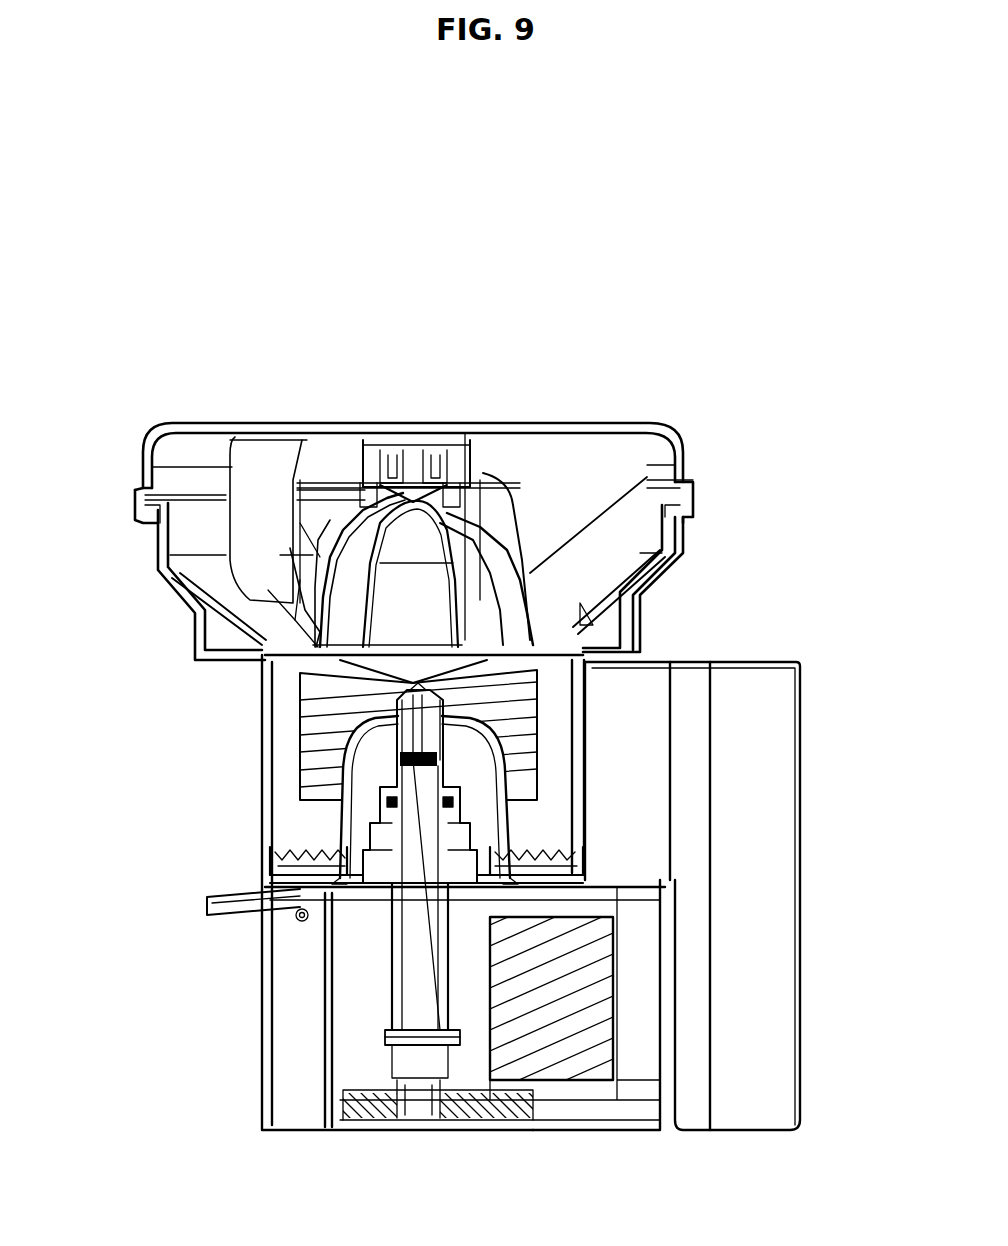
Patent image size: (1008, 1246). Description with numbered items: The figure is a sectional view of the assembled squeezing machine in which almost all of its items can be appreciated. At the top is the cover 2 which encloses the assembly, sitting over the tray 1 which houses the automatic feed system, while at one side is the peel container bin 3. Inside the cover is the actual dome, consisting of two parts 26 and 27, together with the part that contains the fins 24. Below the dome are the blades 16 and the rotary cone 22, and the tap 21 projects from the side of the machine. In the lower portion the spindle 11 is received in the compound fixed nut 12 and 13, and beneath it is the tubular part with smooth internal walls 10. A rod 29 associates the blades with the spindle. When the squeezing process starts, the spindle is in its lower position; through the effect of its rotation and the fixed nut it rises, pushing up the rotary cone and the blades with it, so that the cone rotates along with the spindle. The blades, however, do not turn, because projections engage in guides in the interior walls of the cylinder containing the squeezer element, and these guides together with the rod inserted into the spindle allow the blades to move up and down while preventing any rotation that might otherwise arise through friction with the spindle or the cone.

The tray 1 is at (158, 580).
The cover 2 is at (153, 442).
The peel container bin 3 is at (712, 695).
The tubular part with smooth internal walls 10 is at (398, 1002).
The spindle 11 is at (398, 922).
The compound fixed nut 12 is at (370, 810).
The compound fixed nut 13 is at (345, 766).
The blades 16 is at (345, 688).
The tap 21 is at (217, 907).
The rotary cone 22 is at (330, 850).
The part that contains the fins 24 is at (540, 487).
The dome part 26 is at (360, 560).
The dome part 27 is at (483, 558).
The rod 29 is at (395, 728).